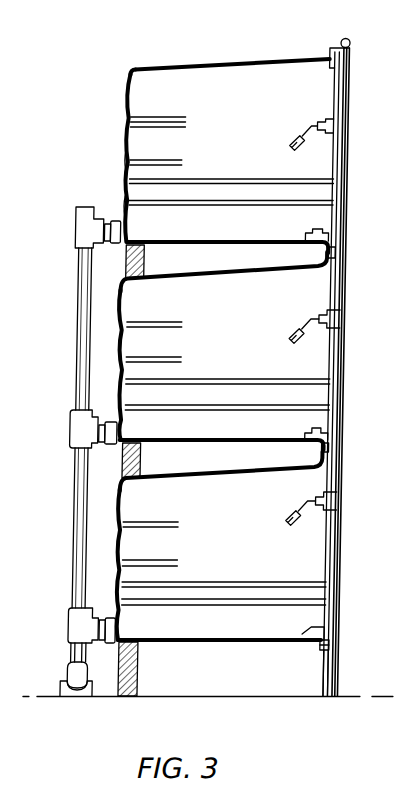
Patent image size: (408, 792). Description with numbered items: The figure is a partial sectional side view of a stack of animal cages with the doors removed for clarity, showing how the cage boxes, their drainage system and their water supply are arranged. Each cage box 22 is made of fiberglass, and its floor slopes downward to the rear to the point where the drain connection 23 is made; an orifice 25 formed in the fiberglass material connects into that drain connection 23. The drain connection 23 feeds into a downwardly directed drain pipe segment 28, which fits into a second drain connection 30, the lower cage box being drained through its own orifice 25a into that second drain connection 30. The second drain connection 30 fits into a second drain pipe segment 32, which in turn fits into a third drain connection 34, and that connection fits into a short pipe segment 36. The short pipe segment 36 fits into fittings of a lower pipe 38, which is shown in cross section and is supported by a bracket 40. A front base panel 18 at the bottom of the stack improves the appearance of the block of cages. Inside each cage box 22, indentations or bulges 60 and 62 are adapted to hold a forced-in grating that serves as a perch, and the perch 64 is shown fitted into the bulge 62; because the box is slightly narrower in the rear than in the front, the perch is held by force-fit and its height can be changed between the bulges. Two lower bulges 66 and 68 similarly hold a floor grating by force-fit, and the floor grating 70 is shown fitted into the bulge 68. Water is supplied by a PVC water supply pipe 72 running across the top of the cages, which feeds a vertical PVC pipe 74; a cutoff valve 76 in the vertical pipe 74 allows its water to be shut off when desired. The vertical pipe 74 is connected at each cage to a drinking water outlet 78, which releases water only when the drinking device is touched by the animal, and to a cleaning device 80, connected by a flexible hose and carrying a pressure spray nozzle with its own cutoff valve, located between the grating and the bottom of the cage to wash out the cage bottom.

The front base panel 18 is at (334, 667).
The cage box 22 is at (129, 70).
The drain connection 23 is at (78, 232).
The orifice 25 is at (132, 242).
The orifice 25a is at (125, 434).
The drain pipe segment 28 is at (81, 326).
The second drain connection 30 is at (77, 427).
The second drain pipe segment 32 is at (83, 498).
The third drain connection 34 is at (86, 623).
The short pipe segment 36 is at (81, 652).
The lower pipe 38 is at (84, 666).
The bracket 40 is at (107, 686).
The indentation 60 is at (130, 127).
The indentation 62 is at (123, 166).
The perch 64 is at (185, 158).
The lower bulge 66 is at (180, 183).
The lower bulge 68 is at (126, 208).
The floor grating 70 is at (251, 182).
The PVC water supply pipe 72 is at (348, 33).
The vertical PVC pipe 74 is at (351, 101).
The cutoff valve 76 is at (350, 60).
The drinking water outlet 78 is at (318, 126).
The cleaning device 80 is at (313, 232).